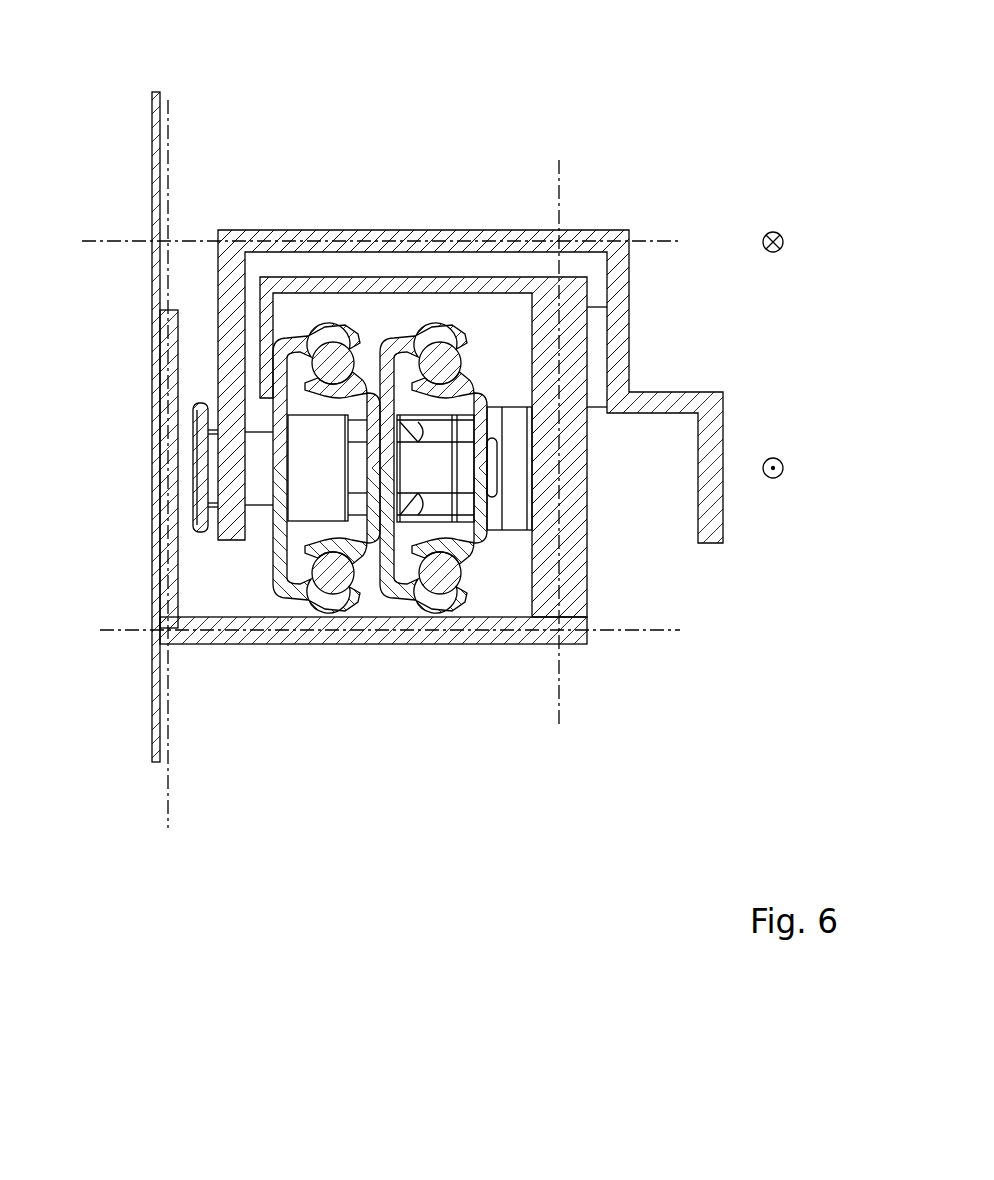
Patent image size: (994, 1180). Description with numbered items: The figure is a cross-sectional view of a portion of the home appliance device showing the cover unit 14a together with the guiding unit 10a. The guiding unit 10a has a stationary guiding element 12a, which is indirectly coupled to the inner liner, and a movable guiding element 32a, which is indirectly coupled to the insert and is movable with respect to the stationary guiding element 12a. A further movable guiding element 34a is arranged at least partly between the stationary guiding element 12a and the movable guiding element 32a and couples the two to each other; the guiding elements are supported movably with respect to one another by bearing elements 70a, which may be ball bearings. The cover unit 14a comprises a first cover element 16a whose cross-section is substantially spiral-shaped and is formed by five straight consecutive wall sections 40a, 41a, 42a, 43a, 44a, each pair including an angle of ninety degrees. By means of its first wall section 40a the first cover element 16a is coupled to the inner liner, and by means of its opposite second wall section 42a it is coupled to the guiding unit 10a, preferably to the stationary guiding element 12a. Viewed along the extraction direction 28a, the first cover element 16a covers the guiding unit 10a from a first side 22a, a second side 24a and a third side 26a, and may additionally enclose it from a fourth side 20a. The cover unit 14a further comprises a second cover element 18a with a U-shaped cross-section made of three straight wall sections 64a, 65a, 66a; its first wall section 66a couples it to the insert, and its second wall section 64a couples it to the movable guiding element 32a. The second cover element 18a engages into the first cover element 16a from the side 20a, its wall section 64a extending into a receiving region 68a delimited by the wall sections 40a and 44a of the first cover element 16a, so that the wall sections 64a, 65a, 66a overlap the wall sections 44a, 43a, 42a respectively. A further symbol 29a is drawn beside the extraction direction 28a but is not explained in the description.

The guiding unit 10a is at (379, 439).
The stationary guiding element 12a is at (475, 568).
The cover unit 14a is at (397, 401).
The first cover element 16a is at (373, 701).
The second cover element 18a is at (397, 318).
The fourth side 20a is at (650, 240).
The first side 22a is at (560, 712).
The second side 24a is at (665, 632).
The third side 26a is at (168, 816).
The extraction direction 28a is at (773, 458).
The direction symbol 29a is at (773, 232).
The movable guiding element 32a is at (272, 597).
The further movable guiding element 34a is at (378, 597).
The first wall section 40a is at (165, 530).
The wall section 41a is at (463, 638).
The second wall section 42a is at (568, 590).
The wall section 43a is at (381, 383).
The wall section 44a is at (270, 365).
The second wall section 64a is at (230, 268).
The wall section 65a is at (515, 232).
The first wall section 66a is at (620, 318).
The receiving region 68a is at (203, 331).
The bearing elements 70a is at (332, 360).